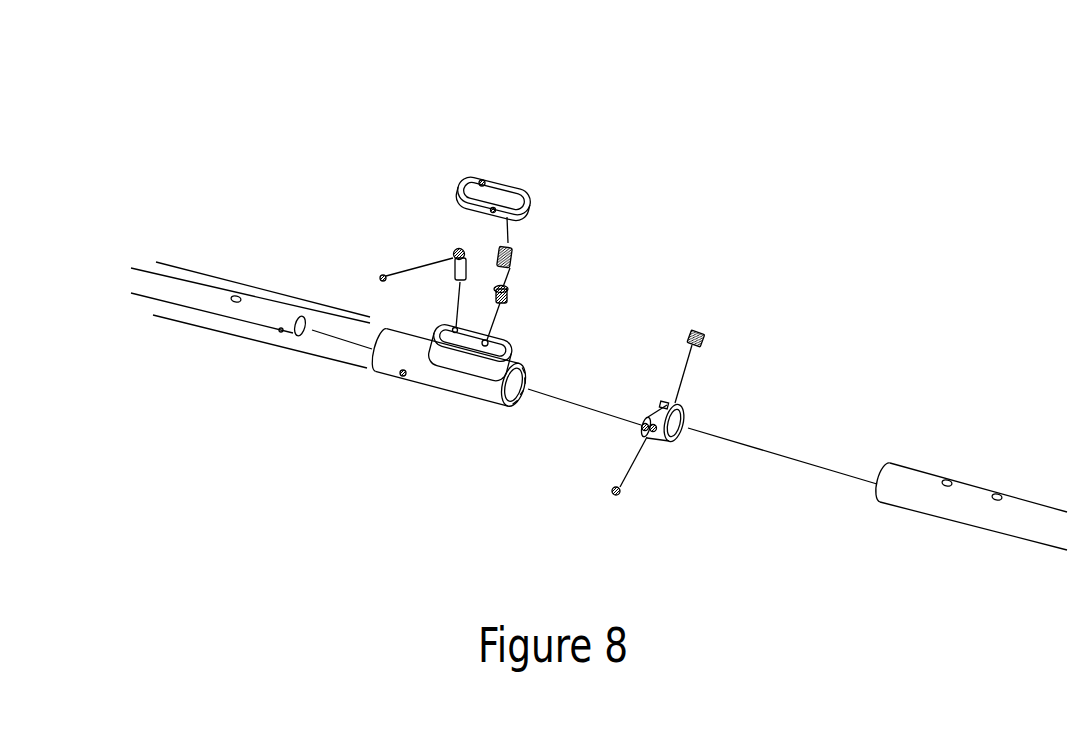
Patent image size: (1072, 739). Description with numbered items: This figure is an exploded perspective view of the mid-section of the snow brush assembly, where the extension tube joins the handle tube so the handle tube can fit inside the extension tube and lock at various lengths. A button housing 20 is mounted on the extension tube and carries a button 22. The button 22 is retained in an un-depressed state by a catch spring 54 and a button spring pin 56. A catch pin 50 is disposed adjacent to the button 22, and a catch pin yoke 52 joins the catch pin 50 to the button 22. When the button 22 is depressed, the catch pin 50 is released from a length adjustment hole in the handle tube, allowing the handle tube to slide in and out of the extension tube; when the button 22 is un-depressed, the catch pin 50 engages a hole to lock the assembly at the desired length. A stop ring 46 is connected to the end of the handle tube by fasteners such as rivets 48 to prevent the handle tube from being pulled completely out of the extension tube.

The button housing 20 is at (403, 373).
The button 22 is at (482, 182).
The stop ring 46 is at (643, 427).
The rivets 48 is at (700, 345).
The catch pin 50 is at (455, 250).
The catch pin yoke 52 is at (381, 277).
The catch spring 54 is at (511, 246).
The button spring pin 56 is at (509, 297).